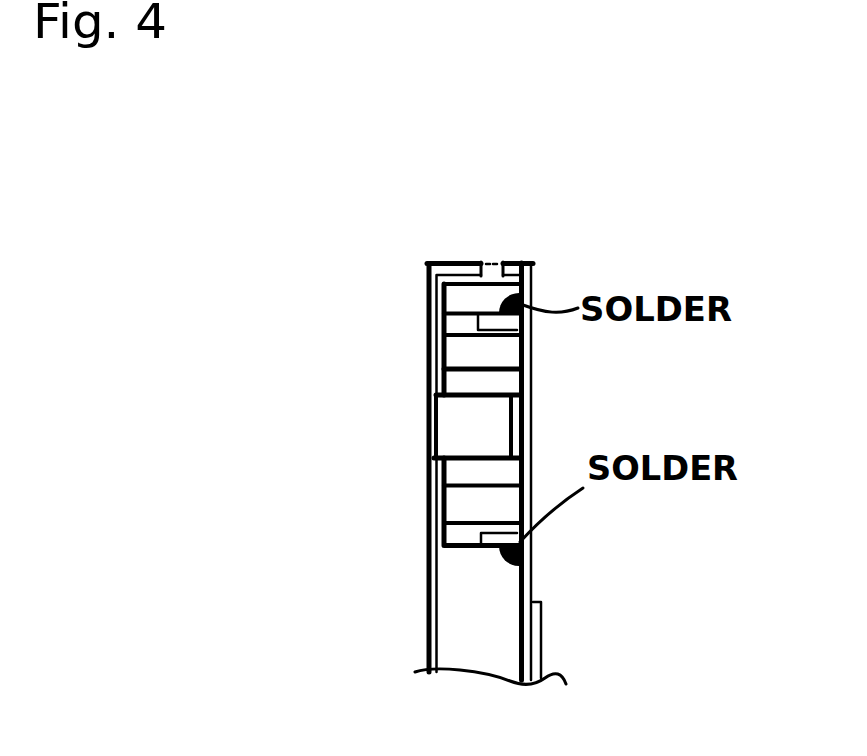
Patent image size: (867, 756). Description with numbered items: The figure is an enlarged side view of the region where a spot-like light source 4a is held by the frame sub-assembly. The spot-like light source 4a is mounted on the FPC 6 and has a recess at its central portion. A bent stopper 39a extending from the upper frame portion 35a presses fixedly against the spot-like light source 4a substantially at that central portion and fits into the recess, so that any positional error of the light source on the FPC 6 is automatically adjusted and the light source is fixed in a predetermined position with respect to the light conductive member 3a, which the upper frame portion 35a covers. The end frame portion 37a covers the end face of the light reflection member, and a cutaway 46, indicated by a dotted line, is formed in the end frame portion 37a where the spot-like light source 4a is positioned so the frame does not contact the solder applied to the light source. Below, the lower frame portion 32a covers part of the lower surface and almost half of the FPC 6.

The spot-like light source 4a is at (472, 380).
The upper frame portion 35a is at (428, 297).
The light conductive member 3a is at (488, 300).
The end frame portion 37a is at (452, 263).
The cutaway 46 is at (493, 272).
The stopper 39a is at (483, 430).
The FPC 6 is at (528, 572).
The lower frame portion 32a is at (542, 632).